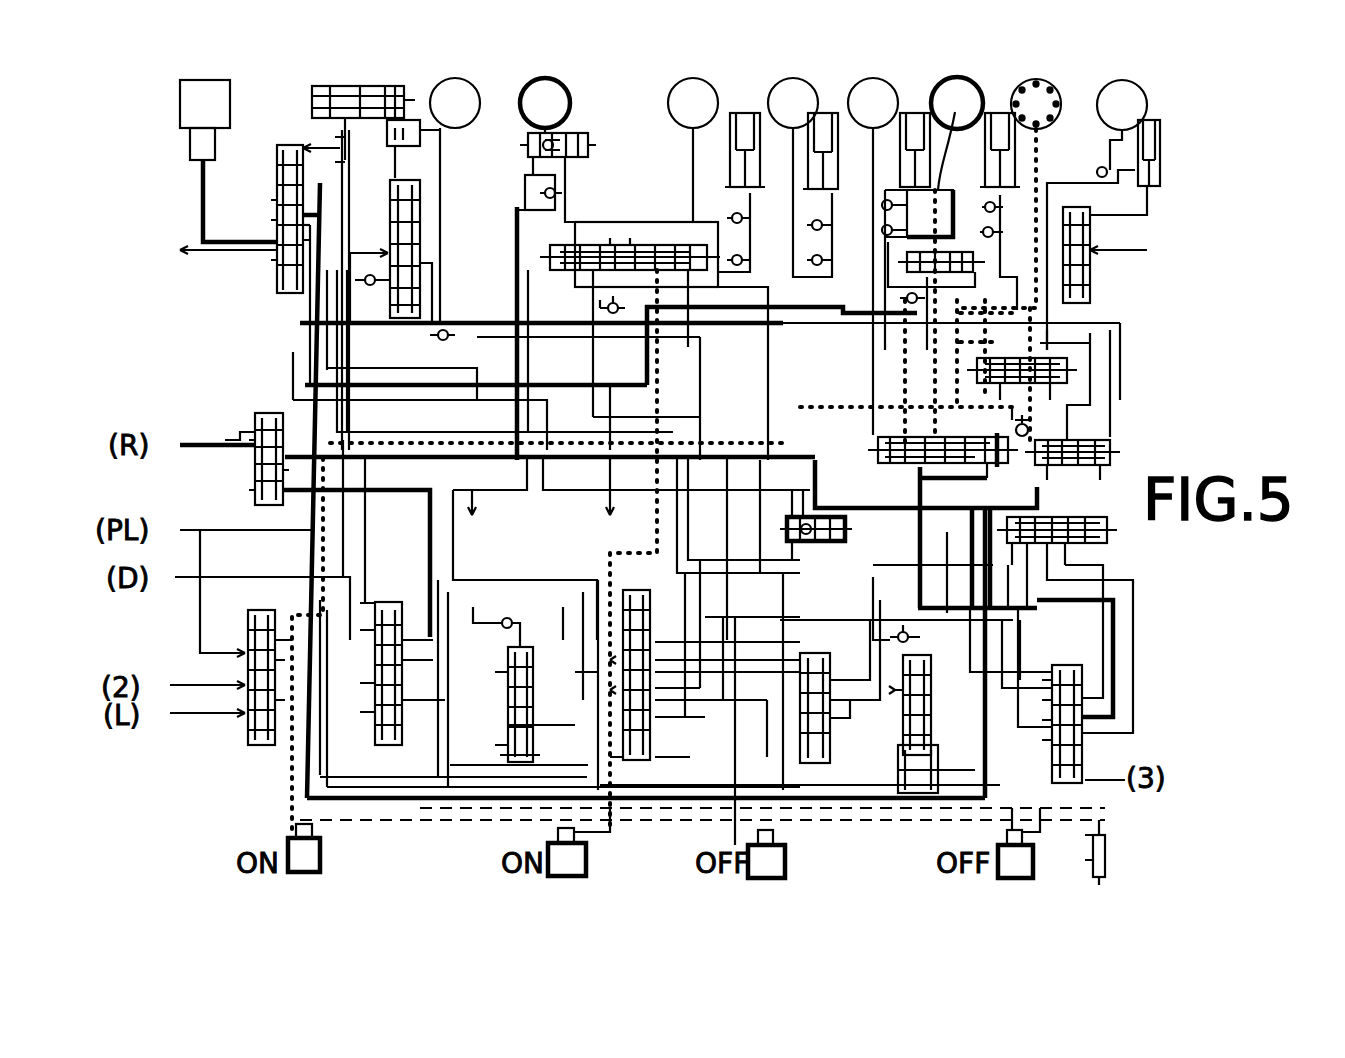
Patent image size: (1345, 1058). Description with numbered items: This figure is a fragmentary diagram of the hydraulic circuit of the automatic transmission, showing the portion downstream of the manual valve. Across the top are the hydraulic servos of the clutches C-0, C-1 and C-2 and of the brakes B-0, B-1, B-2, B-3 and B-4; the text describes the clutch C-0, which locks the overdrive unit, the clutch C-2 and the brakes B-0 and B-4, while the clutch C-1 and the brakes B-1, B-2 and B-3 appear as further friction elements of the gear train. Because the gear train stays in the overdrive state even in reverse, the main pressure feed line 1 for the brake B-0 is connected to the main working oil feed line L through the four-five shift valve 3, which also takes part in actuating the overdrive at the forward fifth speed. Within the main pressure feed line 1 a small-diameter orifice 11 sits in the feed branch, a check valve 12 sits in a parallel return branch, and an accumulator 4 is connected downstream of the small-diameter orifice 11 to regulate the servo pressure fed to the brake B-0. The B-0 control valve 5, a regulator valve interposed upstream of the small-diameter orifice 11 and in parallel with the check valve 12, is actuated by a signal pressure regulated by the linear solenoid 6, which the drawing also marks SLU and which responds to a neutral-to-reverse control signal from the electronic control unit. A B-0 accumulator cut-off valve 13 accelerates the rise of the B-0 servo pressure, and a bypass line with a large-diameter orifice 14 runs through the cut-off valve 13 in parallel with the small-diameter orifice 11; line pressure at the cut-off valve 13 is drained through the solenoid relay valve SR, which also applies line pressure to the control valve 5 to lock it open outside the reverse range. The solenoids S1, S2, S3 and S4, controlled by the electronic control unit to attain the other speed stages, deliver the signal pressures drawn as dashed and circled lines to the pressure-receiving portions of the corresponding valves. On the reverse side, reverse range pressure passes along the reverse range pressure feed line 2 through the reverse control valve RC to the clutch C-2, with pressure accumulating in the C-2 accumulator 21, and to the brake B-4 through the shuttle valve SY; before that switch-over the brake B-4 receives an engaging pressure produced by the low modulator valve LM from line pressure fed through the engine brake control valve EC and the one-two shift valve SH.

The linear solenoid 6 is at (185, 124).
The C-2 accumulator 21 is at (918, 118).
The accumulator 4 is at (1005, 118).
The large-diameter orifice 14 is at (957, 312).
The B-0 accumulator cut-off valve 13 is at (1075, 368).
The small-diameter orifice 11 is at (943, 417).
The check valve 12 is at (1030, 430).
The B-0 control valve 5 is at (997, 467).
The reverse range pressure feed line 2 is at (186, 422).
The main pressure feed line 1 is at (1061, 620).
The 4-5 shift valve 3 is at (1065, 785).
The lock-up solenoid SLU is at (193, 122).
The solenoid relay valve SR is at (290, 295).
The reverse control valve RC is at (258, 413).
The engine brake control valve EC is at (250, 745).
The 1-2 shift valve SH is at (383, 748).
The low modulator valve LM is at (515, 765).
The shuttle valve SY is at (590, 147).
The clutch C-1 is at (465, 118).
The clutch C-2 is at (918, 213).
The clutch C-0 is at (1130, 100).
The brake B-0 is at (1058, 104).
The brake B-1 is at (872, 92).
The brake B-2 is at (782, 92).
The brake B-3 is at (680, 92).
The brake B-4 is at (538, 84).
The solenoid S1 is at (580, 858).
The solenoid S2 is at (785, 860).
The solenoid S3 is at (1022, 860).
The solenoid S4 is at (290, 866).
The main working oil feed line L is at (190, 530).